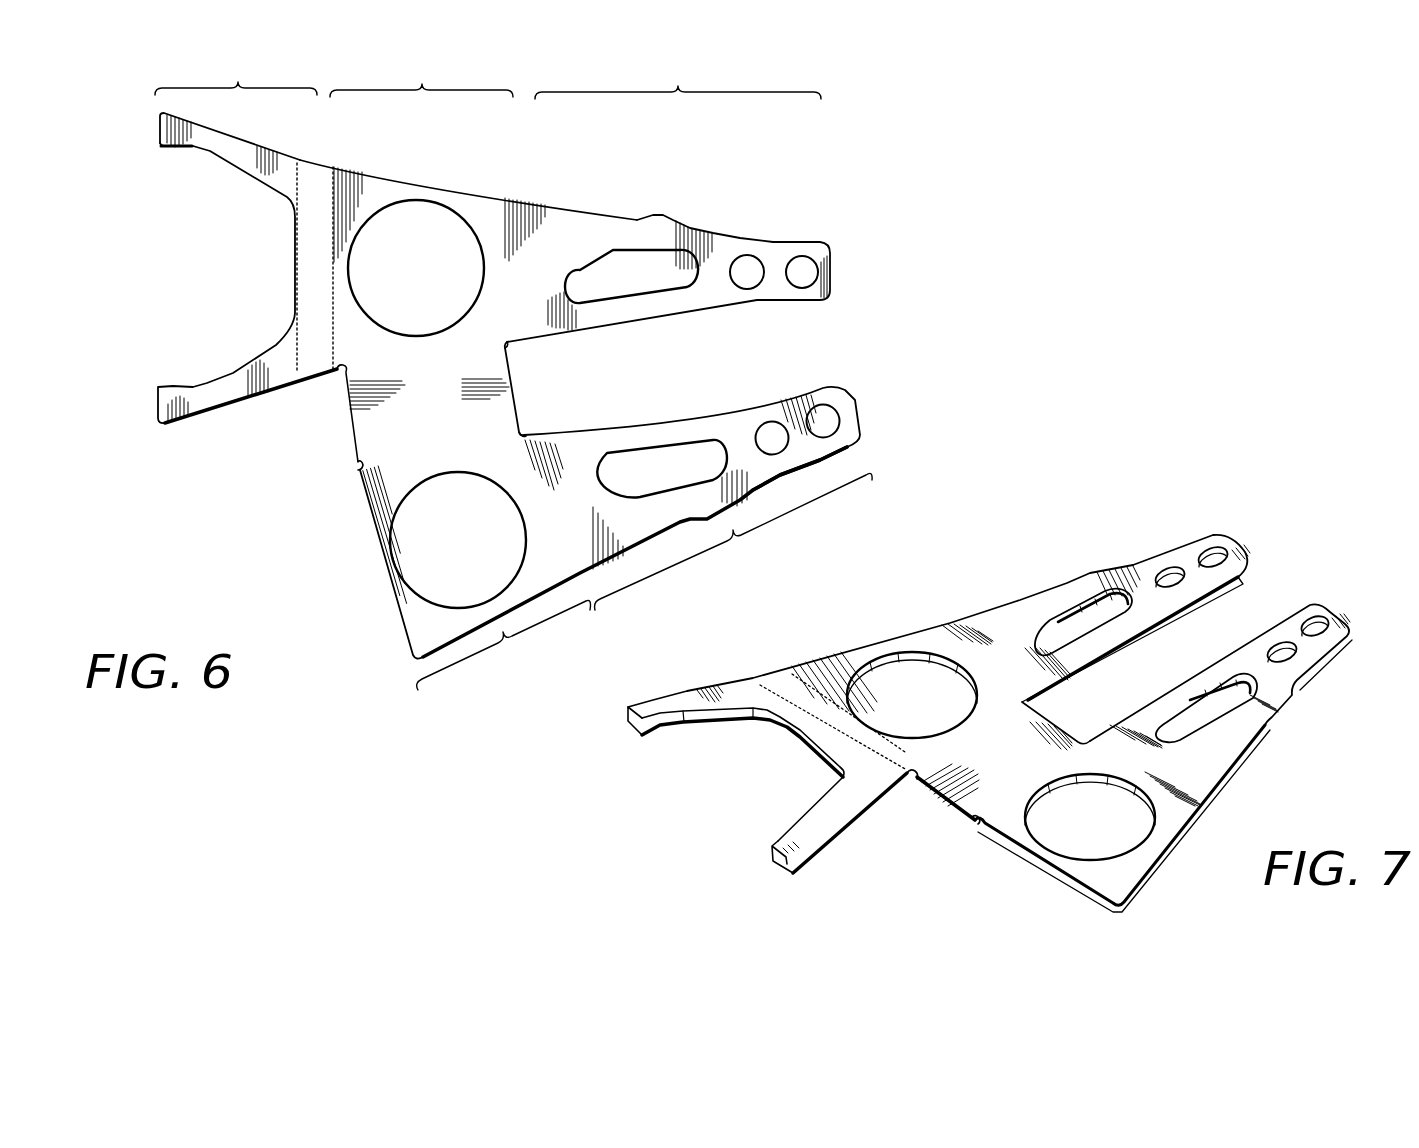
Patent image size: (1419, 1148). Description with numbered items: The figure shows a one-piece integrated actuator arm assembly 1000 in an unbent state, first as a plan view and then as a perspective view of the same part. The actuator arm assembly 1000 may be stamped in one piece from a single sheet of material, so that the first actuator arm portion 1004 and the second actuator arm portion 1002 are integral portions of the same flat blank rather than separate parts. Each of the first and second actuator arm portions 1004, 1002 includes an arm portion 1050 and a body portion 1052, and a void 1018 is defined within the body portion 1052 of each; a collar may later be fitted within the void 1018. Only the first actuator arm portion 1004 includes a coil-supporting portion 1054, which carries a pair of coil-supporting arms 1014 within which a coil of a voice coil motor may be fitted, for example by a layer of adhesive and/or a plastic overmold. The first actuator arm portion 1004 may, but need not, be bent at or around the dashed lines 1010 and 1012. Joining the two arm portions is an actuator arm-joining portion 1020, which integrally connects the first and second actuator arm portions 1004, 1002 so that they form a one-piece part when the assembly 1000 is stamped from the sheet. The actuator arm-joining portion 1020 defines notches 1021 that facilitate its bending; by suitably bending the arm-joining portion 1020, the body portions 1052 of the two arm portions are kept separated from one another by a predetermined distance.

In FIG. 6, the one-piece integrated actuator arm assembly 1000 is at (564, 383).
In FIG. 7, the one-piece integrated actuator arm assembly 1000 is at (990, 712).
In FIG. 6, the second actuator arm portion 1002 is at (776, 392).
In FIG. 7, the second actuator arm portion 1002 is at (1313, 688).
In FIG. 6, the first actuator arm portion 1004 is at (757, 232).
In FIG. 7, the first actuator arm portion 1004 is at (1120, 555).
In FIG. 6, the dashed line 1010 is at (325, 183).
In FIG. 6, the dashed line 1012 is at (293, 183).
In FIG. 6, the coil-supporting arms 1014 is at (212, 158).
In FIG. 7, the coil-supporting arms 1014 is at (700, 723).
In FIG. 6, the void 1018 is at (420, 295).
In FIG. 7, the void 1018 is at (904, 716).
In FIG. 6, the actuator arm-joining portion 1020 is at (517, 395).
In FIG. 7, the actuator arm-joining portion 1020 is at (1043, 717).
In FIG. 6, the notches 1021 is at (333, 373).
In FIG. 7, the notches 1021 is at (911, 778).
In FIG. 6, the arm portion 1050 is at (703, 335).
In FIG. 6, the body portion 1052 is at (460, 374).
In FIG. 6, the coil-supporting portion 1054 is at (236, 74).